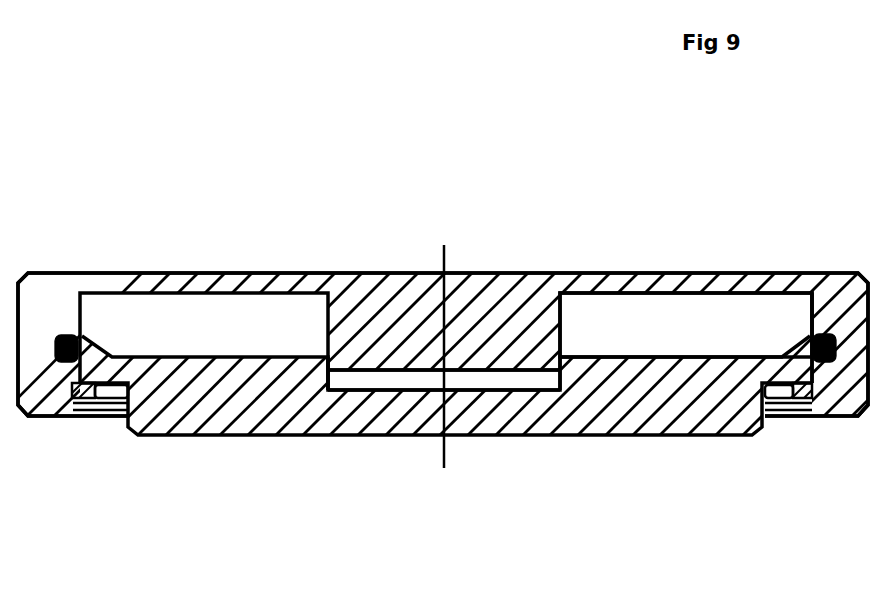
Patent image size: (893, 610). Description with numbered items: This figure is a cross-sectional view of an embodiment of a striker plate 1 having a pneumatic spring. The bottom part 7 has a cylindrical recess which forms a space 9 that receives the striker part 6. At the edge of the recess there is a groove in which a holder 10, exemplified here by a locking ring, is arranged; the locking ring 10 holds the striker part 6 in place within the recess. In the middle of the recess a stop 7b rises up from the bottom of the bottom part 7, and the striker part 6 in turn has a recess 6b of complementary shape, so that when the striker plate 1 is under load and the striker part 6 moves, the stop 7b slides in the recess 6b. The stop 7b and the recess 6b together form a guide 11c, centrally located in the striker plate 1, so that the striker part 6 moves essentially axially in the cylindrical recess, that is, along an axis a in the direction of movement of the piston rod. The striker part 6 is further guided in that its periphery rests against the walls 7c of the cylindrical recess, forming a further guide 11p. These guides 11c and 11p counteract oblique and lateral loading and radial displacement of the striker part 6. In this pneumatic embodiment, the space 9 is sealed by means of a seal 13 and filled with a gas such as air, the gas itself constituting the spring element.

The striker plate 1 is at (502, 175).
The striker part 6 is at (637, 418).
The recess 6b is at (473, 390).
The bottom part 7 is at (838, 287).
The stop 7b is at (482, 368).
The walls 7c is at (808, 322).
The space 9 is at (708, 330).
The holder 10 is at (803, 400).
The guide 11c is at (325, 368).
The guide 11p is at (78, 381).
The seal 13 is at (66, 345).
The axis a is at (443, 452).